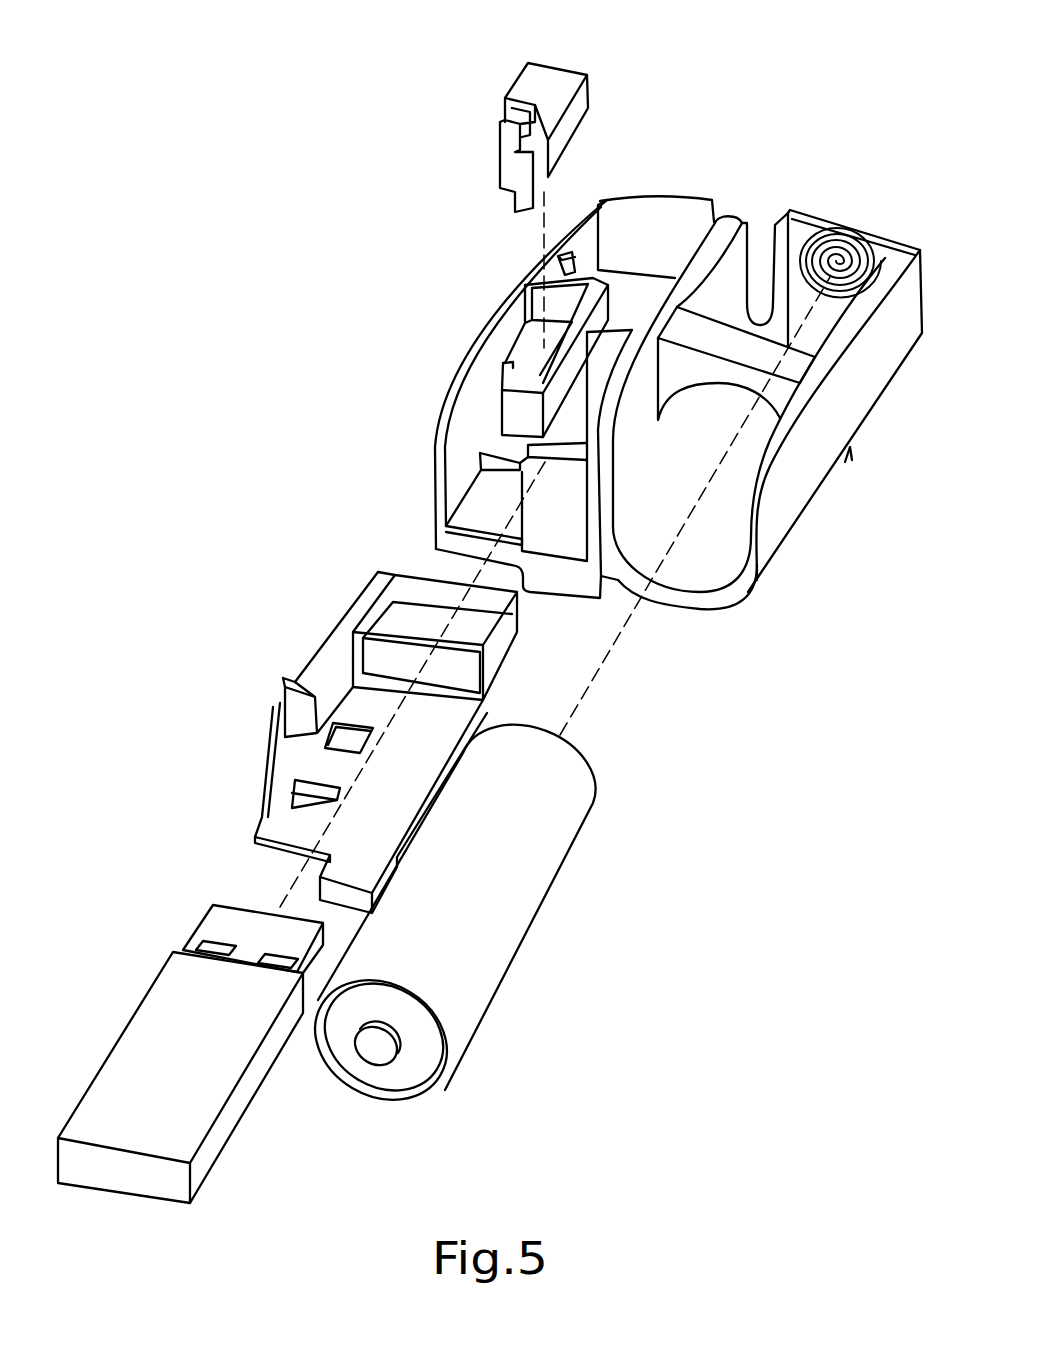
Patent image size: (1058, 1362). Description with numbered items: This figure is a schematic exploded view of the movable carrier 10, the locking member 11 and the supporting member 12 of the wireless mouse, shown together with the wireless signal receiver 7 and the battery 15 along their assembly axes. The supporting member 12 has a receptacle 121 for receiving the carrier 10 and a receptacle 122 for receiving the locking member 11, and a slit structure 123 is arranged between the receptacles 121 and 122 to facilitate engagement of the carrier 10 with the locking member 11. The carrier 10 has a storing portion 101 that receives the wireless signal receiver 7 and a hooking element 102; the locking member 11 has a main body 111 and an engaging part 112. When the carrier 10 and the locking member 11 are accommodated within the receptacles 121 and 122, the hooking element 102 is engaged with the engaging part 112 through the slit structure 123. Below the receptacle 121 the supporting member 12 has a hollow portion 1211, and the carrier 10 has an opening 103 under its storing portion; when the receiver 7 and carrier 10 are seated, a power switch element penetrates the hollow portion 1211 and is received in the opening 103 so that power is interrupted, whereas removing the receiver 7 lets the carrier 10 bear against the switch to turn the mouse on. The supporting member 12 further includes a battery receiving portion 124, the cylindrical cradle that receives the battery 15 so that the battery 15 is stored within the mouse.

The wireless signal receiver 7 is at (94, 1013).
The movable carrier 10 is at (358, 742).
The storing portion 101 is at (397, 662).
The hooking element 102 is at (297, 717).
The opening 103 is at (310, 800).
The locking member 11 is at (526, 137).
The main body 111 is at (553, 83).
The engaging part 112 is at (515, 193).
The supporting member 12 is at (651, 442).
The receptacle 121 is at (527, 357).
The hollow portion 1211 is at (483, 513).
The receptacle 122 is at (563, 488).
The slit structure 123 is at (482, 415).
The battery receiving portion 124 is at (710, 533).
The battery 15 is at (490, 930).